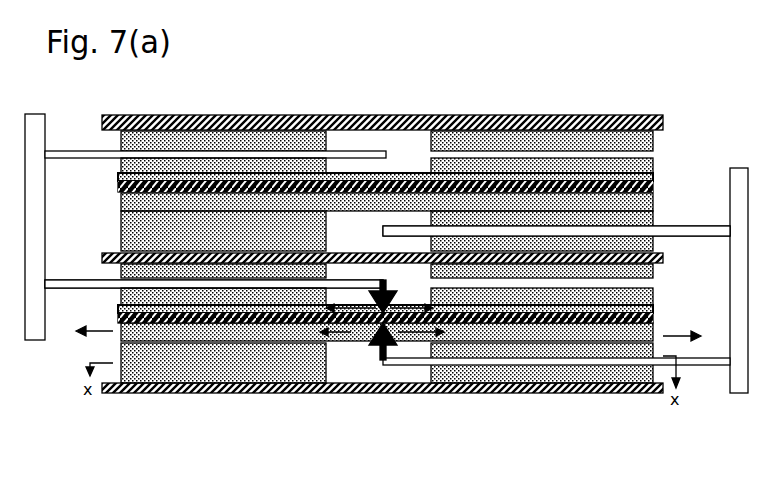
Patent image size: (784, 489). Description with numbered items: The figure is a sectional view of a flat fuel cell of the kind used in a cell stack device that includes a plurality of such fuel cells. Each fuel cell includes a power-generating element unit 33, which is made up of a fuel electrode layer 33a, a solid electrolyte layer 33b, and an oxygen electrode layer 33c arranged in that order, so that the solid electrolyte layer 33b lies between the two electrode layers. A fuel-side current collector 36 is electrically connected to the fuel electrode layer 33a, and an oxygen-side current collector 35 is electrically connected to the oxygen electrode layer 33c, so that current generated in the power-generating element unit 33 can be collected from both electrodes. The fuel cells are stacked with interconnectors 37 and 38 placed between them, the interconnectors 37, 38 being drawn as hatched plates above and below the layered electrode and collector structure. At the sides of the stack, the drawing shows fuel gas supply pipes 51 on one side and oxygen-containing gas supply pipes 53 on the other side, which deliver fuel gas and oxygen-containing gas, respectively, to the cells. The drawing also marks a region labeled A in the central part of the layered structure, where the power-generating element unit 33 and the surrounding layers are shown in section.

The power-generating element unit 33 is at (387, 174).
The fuel electrode layer 33a is at (648, 197).
The solid electrolyte layer 33b is at (649, 182).
The oxygen electrode layer 33c is at (118, 162).
The oxygen-side current collector 35 is at (617, 283).
The fuel-side current collector 36 is at (540, 363).
The interconnector 37 is at (115, 242).
The interconnector 38 is at (220, 385).
The fuel gas supply pipe 51 is at (707, 360).
The oxygen-containing gas supply pipe 53 is at (110, 283).
The gap region A is at (418, 140).